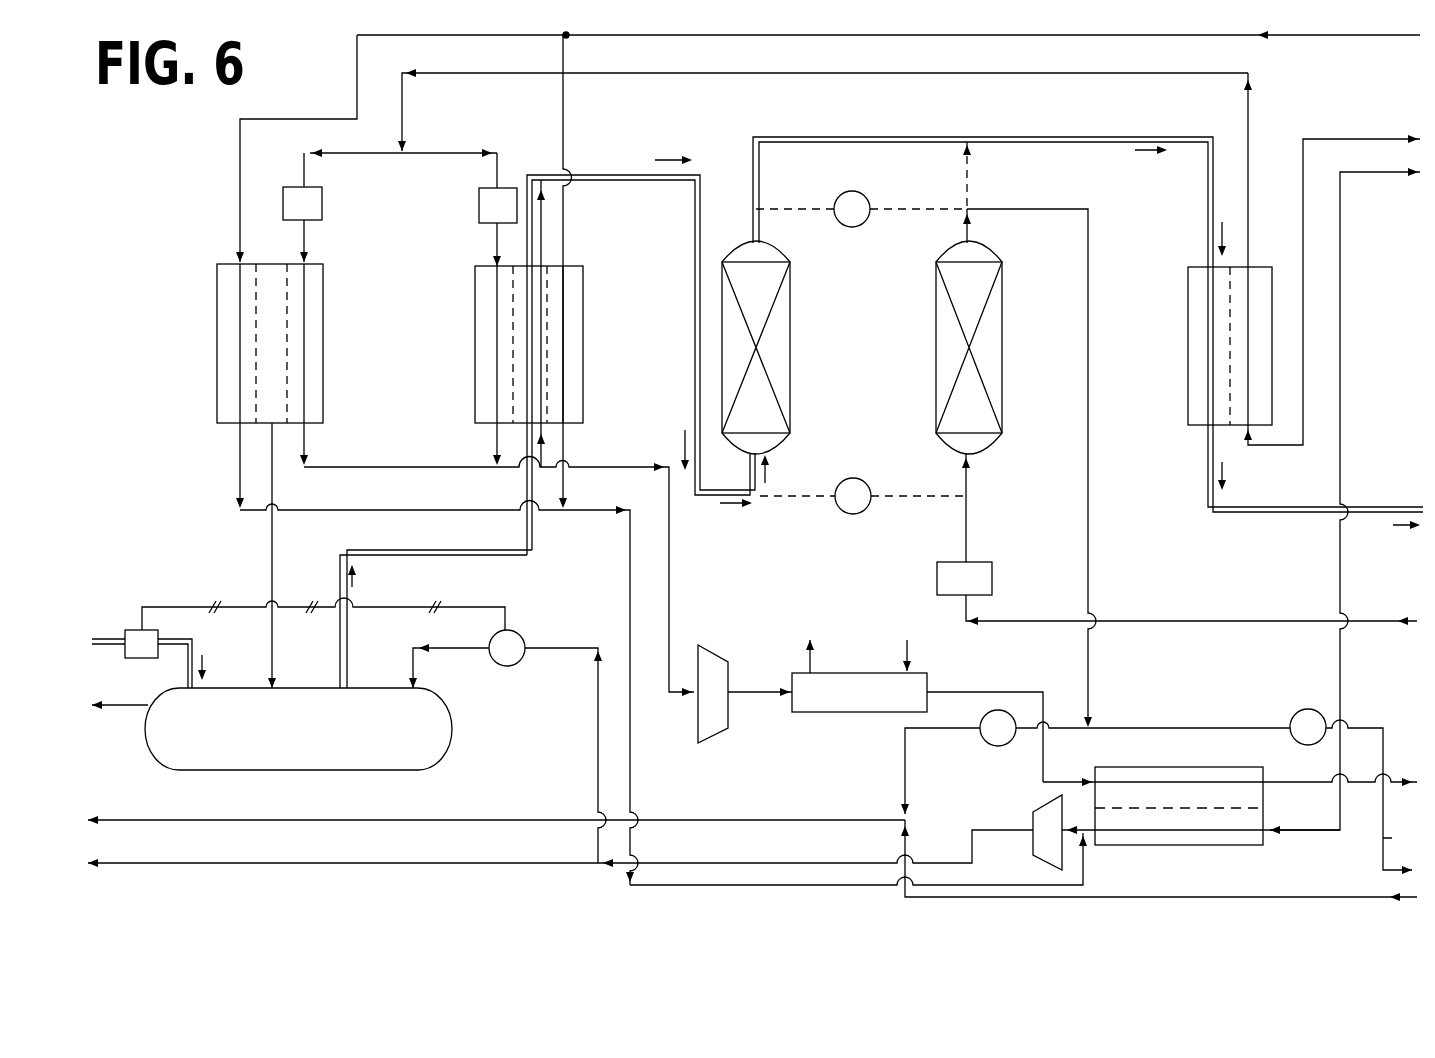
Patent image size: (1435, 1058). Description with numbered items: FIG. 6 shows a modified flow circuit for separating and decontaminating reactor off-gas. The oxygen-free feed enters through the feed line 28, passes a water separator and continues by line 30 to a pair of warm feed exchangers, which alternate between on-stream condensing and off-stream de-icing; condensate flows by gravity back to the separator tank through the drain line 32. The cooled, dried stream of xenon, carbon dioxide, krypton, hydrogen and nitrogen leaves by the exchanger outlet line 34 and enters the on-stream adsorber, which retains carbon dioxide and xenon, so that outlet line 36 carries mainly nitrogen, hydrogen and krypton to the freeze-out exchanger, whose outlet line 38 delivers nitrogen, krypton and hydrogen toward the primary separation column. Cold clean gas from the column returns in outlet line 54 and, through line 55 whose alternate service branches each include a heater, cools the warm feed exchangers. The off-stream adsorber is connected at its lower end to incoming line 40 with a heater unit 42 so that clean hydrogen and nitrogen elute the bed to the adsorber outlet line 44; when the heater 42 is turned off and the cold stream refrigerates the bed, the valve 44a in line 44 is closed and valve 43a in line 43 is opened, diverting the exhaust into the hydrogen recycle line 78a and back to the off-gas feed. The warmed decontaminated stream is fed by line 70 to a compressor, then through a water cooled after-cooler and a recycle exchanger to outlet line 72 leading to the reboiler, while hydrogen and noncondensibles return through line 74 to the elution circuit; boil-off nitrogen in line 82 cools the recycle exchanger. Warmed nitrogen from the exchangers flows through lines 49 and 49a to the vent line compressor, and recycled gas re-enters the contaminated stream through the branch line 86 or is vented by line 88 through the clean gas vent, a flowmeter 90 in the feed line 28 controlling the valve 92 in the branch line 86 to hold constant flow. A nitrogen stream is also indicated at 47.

The feed line 28 is at (130, 636).
The line 30 is at (339, 562).
The drain line 32 is at (270, 562).
The exchanger outlet line 34 is at (636, 176).
The outlet line 36 is at (844, 138).
The outlet line 38 is at (1302, 514).
The incoming line 40 is at (968, 486).
The heater unit 42 is at (993, 570).
The line 43 is at (904, 750).
The valve 43a is at (990, 712).
The adsorber outlet line 44 is at (996, 209).
The valve 44a is at (1318, 694).
The nitrogen line 47 is at (1240, 38).
The line 49 is at (460, 510).
The line 49a is at (633, 760).
The outlet line 54 is at (1383, 138).
The line 55 is at (407, 128).
The line 70 is at (592, 466).
The outlet line 72 is at (1282, 782).
The line 74 is at (1362, 625).
The hydrogen recycle line 78a is at (514, 818).
The line 82 is at (1350, 178).
The branch line 86 is at (597, 737).
The vent line 88 is at (516, 860).
The flowmeter 90 is at (142, 659).
The valve 92 is at (522, 636).